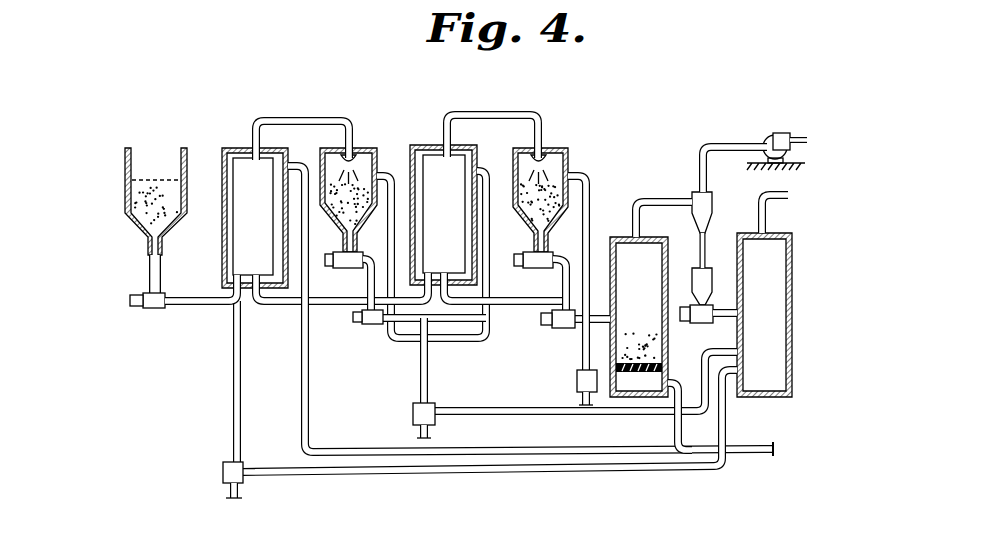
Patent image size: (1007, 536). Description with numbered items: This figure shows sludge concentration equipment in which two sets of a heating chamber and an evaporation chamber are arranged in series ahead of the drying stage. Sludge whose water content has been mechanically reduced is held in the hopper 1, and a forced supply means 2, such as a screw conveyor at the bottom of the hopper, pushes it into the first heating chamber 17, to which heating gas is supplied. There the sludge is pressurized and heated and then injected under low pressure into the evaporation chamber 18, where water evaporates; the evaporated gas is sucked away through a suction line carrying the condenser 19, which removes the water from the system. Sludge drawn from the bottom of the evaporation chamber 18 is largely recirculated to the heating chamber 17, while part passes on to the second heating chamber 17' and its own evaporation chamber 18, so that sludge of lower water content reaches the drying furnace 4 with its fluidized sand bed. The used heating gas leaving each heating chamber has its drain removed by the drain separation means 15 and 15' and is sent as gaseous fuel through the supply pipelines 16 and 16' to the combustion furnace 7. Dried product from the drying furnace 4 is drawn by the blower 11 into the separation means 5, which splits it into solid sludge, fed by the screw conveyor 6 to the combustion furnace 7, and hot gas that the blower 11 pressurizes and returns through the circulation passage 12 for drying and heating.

The hopper 1 is at (160, 160).
The forced supply means 2 is at (143, 296).
The drying furnace 4 is at (618, 240).
The separation means 5 is at (691, 200).
The screw conveyor 6 is at (692, 290).
The combustion furnace 7 is at (745, 236).
The blower 11 is at (768, 134).
The circulation passage 12 is at (804, 137).
The drain separation means 15 is at (214, 480).
The drain separation means 15' is at (405, 420).
The supply pipeline 16 is at (490, 440).
The supply pipeline 16' is at (586, 381).
The heating chamber 17 is at (255, 189).
The heating chamber 17' is at (443, 188).
The evaporation chamber 18 is at (356, 149).
The condenser 19 is at (576, 383).